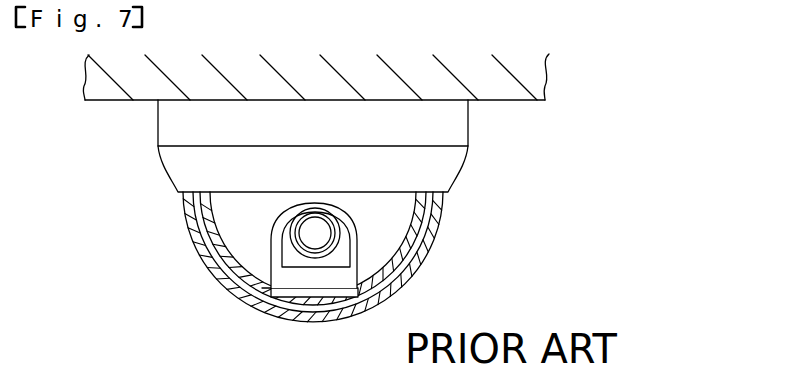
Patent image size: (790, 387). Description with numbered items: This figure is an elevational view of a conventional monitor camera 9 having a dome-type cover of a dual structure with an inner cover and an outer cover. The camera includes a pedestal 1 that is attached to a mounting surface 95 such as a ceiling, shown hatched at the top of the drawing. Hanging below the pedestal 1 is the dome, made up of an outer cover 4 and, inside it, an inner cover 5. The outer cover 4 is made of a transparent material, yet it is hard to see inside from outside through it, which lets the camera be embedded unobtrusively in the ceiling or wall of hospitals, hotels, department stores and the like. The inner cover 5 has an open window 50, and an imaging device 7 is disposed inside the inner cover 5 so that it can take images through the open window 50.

The mounting surface 95 is at (510, 100).
The pedestal 1 is at (440, 172).
The monitor camera 9 is at (366, 251).
The outer cover 4 is at (414, 263).
The inner cover 5 is at (435, 235).
The open window 50 is at (265, 285).
The imaging device 7 is at (308, 233).